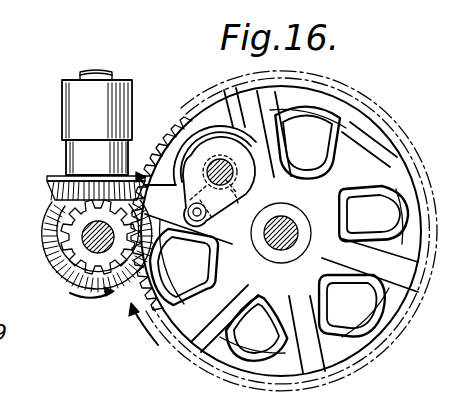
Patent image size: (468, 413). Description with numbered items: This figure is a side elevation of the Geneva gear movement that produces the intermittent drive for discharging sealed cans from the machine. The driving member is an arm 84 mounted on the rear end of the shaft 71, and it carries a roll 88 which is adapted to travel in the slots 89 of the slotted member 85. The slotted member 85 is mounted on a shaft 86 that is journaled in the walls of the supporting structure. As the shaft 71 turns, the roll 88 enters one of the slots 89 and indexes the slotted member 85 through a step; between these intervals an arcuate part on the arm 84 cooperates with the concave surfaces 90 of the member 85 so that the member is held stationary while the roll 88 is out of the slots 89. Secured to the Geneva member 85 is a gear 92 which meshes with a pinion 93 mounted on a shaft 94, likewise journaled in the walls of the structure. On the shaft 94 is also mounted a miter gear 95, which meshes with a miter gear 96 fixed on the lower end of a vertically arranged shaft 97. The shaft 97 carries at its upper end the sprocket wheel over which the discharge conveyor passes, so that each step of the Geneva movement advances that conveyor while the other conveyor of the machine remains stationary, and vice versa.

The shaft 71 is at (218, 165).
The arm 84 is at (222, 208).
The slotted member 85 is at (196, 356).
The shaft 86 is at (281, 250).
The roll 88 is at (184, 262).
The slots 89 is at (244, 117).
The concave surfaces 90 is at (395, 200).
The gear 92 is at (167, 133).
The pinion 93 is at (70, 280).
The shaft 94 is at (83, 231).
The miter gear 95 is at (55, 258).
The miter gear 96 is at (56, 177).
The vertically arranged shaft 97 is at (101, 70).